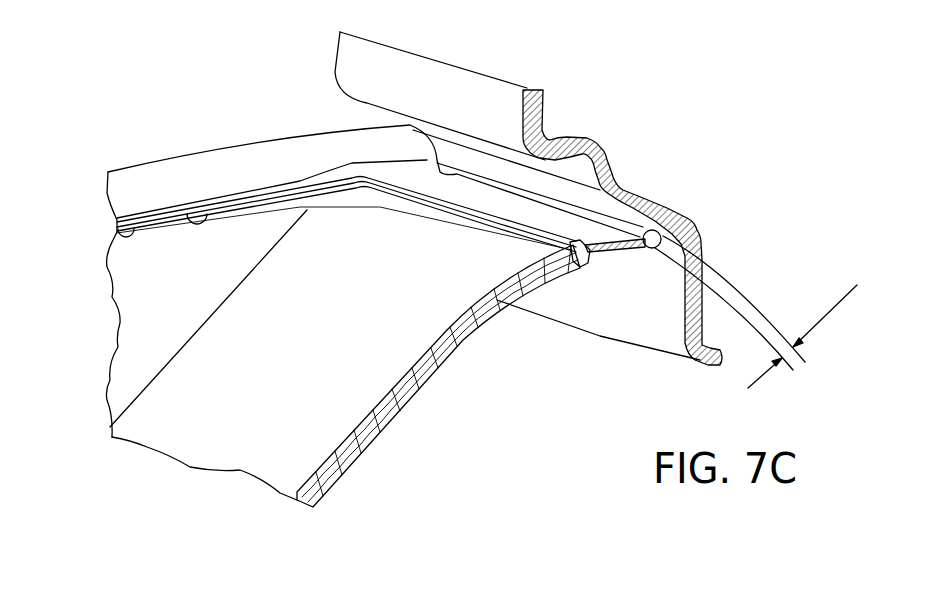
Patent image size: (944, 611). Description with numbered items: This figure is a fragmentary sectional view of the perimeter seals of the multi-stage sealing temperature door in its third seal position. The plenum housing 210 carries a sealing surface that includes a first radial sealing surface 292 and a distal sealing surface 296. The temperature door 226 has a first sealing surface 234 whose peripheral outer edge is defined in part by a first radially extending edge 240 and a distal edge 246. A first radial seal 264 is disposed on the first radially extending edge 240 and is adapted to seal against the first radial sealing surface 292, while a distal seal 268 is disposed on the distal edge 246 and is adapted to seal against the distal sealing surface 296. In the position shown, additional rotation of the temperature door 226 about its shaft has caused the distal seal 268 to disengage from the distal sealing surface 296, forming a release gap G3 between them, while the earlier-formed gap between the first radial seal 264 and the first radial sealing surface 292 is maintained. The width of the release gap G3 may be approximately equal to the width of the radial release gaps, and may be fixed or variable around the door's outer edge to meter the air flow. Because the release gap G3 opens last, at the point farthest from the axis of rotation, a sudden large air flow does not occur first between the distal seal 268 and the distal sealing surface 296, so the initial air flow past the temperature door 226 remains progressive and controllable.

The plenum housing 210 is at (233, 172).
The temperature door 226 is at (353, 318).
The first sealing surface 234 is at (482, 297).
The first radially extending edge 240 is at (206, 214).
The distal edge 246 is at (457, 173).
The first radial seal 264 is at (117, 243).
The distal seal 268 is at (644, 230).
The first radial sealing surface 292 is at (153, 211).
The distal sealing surface 296 is at (633, 212).
The release gap G3 is at (837, 304).